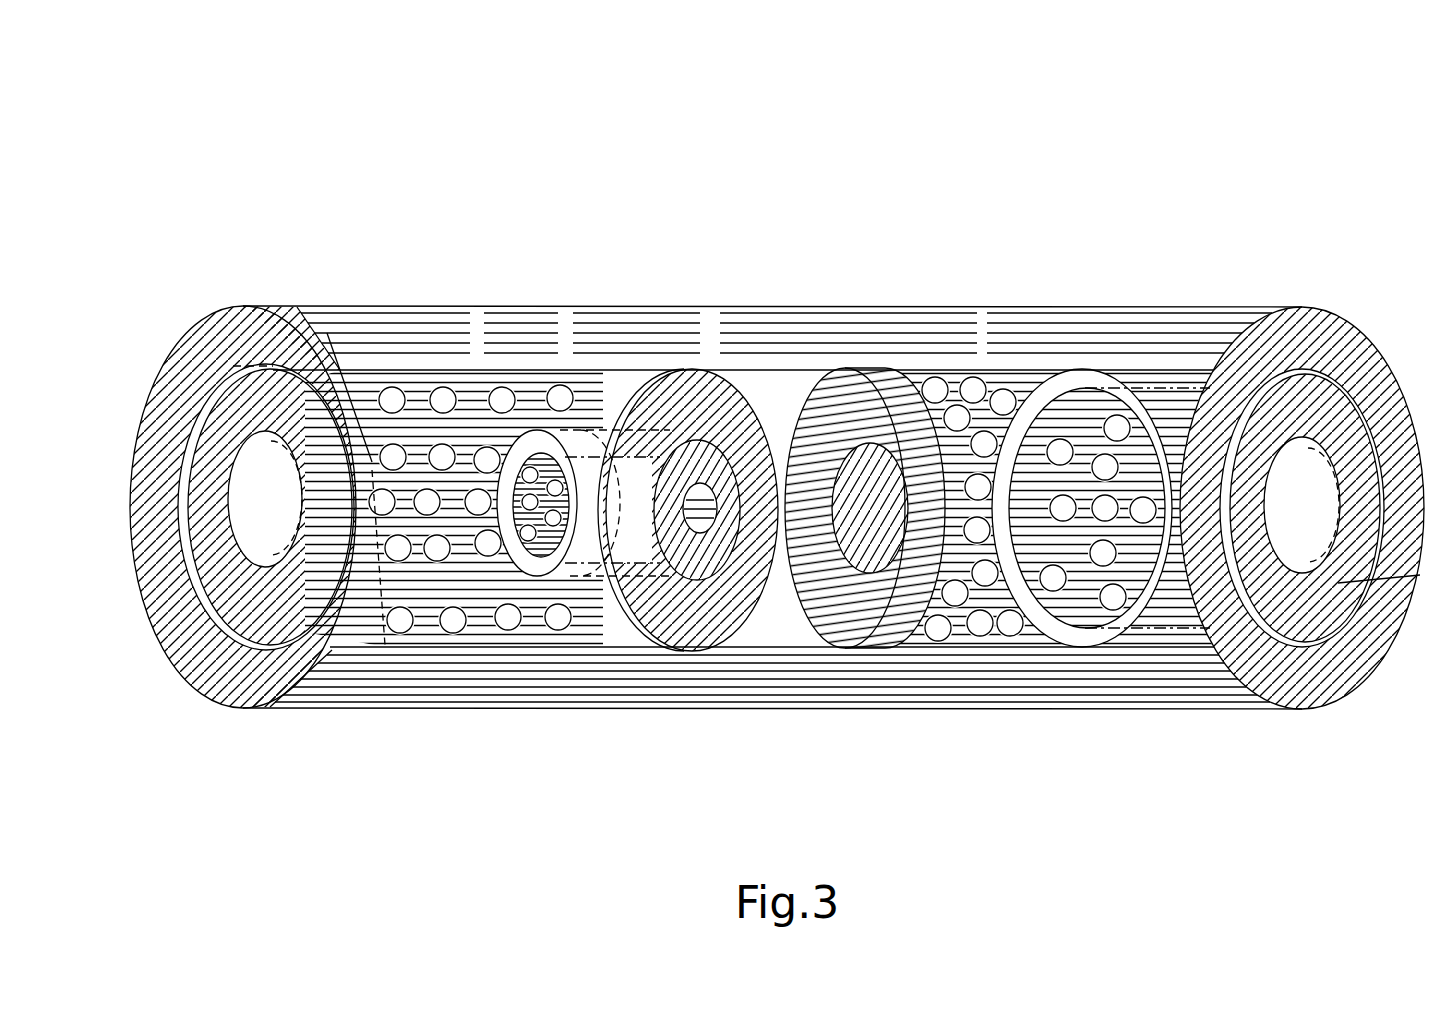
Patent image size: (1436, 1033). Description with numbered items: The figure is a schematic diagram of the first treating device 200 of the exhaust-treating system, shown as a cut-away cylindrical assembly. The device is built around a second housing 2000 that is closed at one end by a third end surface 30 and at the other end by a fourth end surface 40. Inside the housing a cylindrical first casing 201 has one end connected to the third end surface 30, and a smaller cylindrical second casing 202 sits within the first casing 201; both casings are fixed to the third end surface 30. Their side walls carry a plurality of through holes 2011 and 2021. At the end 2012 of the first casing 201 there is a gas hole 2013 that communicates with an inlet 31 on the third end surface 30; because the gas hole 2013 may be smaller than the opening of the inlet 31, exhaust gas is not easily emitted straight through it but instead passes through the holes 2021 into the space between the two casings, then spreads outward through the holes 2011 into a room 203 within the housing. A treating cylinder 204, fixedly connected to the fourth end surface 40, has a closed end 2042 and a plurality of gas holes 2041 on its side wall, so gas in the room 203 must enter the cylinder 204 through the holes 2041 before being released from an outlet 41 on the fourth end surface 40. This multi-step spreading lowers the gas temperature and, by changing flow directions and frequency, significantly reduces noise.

The first treating device 200 is at (711, 755).
The second housing 2000 is at (1118, 300).
The third end surface 30 is at (215, 668).
The inlet 31 is at (266, 490).
The first casing 201 is at (477, 352).
The through holes 2011 is at (568, 378).
The second casing 202 is at (394, 570).
The through holes 2021 is at (490, 568).
The end of the first casing 2012 is at (671, 386).
The gas hole 2013 is at (703, 486).
The room 203 is at (782, 392).
The treating cylinder 204 is at (904, 368).
The gas holes 2041 is at (975, 372).
The closed end 2042 is at (900, 598).
The fourth end surface 40 is at (1331, 672).
The outlet 41 is at (1300, 460).